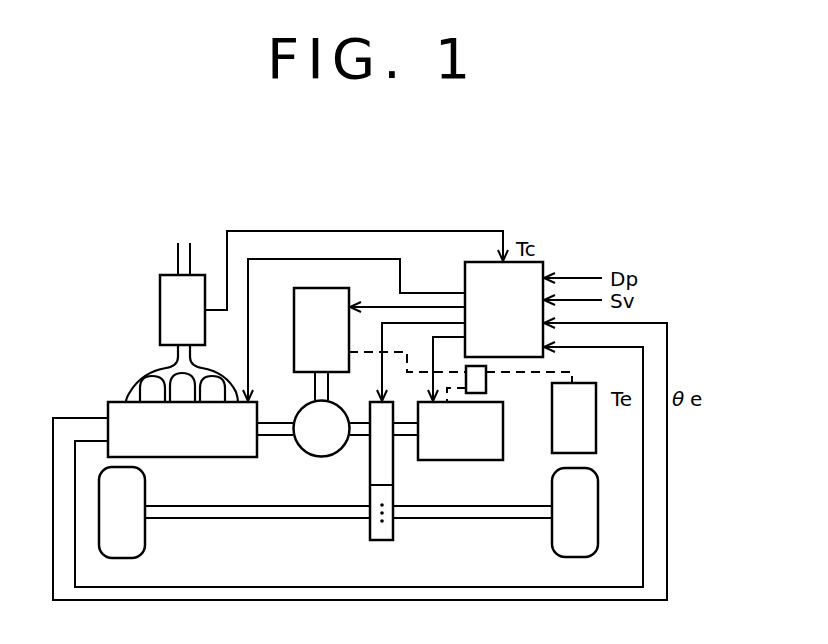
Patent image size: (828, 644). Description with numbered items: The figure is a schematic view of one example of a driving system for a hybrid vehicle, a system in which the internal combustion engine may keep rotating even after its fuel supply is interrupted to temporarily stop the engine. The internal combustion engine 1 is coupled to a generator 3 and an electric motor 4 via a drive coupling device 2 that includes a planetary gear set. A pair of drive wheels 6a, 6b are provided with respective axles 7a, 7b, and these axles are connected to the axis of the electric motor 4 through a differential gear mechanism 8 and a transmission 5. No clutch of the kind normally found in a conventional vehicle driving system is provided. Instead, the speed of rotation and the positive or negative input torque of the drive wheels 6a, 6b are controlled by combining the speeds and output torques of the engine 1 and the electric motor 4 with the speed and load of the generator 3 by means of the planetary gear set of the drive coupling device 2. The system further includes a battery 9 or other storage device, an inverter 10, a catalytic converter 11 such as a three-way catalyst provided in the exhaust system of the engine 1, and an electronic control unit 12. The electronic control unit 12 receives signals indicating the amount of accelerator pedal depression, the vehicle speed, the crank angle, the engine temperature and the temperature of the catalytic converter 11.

The internal combustion engine 1 is at (200, 458).
The drive coupling device 2 is at (318, 457).
The generator 3 is at (294, 330).
The electric motor 4 is at (465, 460).
The transmission 5 is at (387, 462).
The drive wheel 6a is at (145, 540).
The drive wheel 6b is at (552, 540).
The axle 7a is at (290, 513).
The axle 7b is at (441, 513).
The differential gear mechanism 8 is at (380, 524).
The battery 9 is at (596, 432).
The inverter 10 is at (486, 383).
The catalytic converter 11 is at (160, 310).
The electronic control unit 12 is at (541, 268).